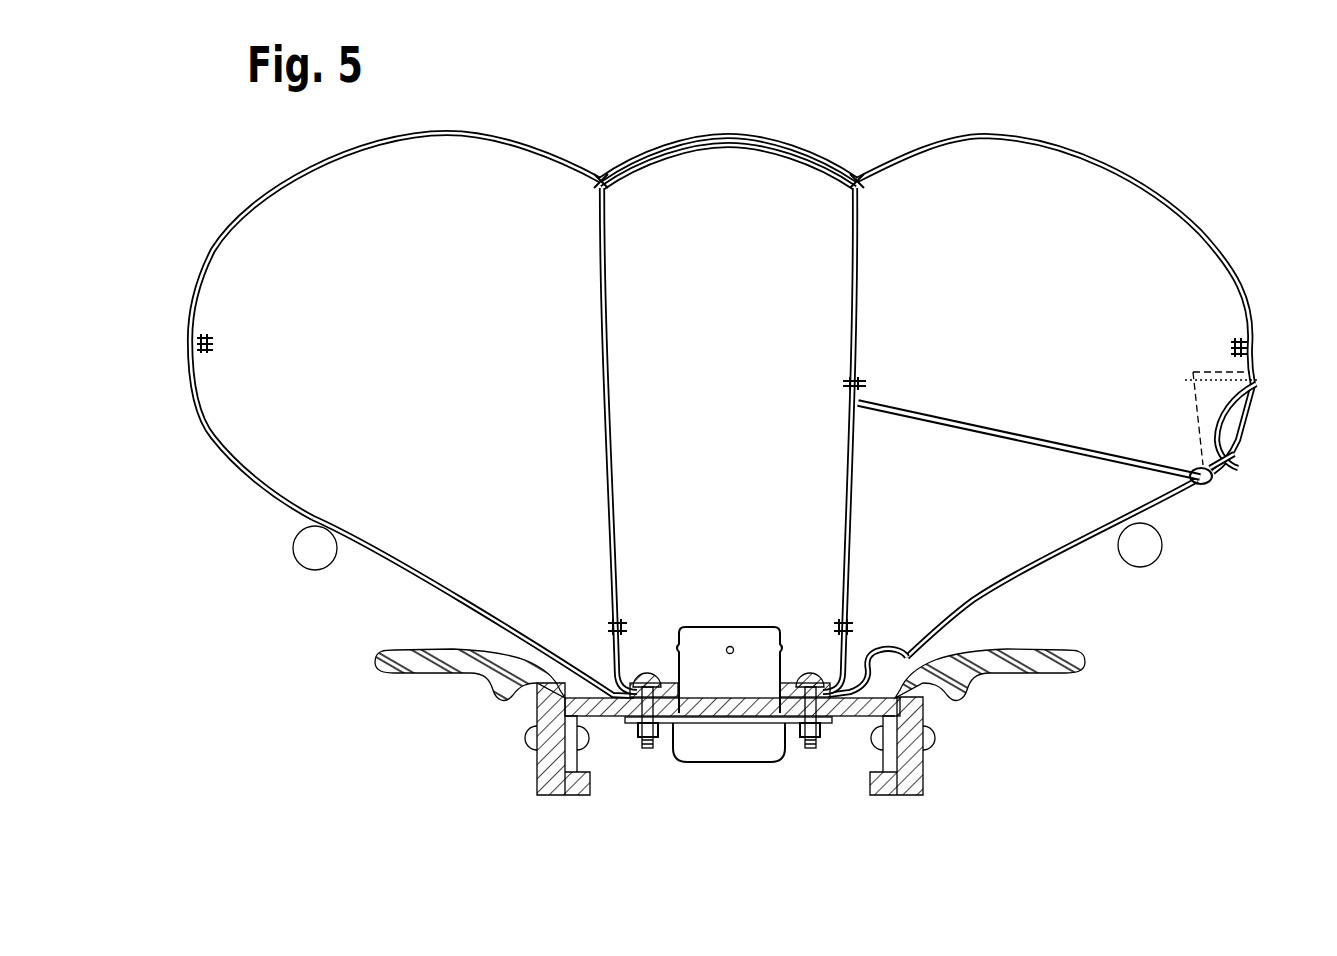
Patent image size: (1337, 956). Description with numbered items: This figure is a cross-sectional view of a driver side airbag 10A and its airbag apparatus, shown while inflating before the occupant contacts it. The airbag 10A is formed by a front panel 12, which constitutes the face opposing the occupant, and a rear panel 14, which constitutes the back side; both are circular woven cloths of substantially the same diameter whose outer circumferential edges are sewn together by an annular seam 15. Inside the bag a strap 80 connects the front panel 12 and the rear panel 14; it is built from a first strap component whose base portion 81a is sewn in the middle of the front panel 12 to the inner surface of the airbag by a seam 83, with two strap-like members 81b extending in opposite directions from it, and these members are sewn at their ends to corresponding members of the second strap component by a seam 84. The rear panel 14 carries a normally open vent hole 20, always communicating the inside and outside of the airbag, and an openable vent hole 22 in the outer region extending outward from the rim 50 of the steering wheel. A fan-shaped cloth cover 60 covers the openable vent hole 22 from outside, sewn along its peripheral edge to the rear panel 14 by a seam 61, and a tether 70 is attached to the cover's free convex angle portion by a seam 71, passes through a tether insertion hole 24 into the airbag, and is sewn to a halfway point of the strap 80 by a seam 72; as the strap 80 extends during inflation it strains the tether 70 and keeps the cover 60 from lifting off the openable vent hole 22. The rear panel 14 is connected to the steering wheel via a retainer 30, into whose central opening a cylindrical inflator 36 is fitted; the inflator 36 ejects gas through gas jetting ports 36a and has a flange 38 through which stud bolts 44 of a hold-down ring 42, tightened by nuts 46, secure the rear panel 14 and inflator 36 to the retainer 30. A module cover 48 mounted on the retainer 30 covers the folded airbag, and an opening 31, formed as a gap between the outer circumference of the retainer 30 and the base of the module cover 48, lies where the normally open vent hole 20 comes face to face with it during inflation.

The airbag 10A is at (1091, 127).
The front panel 12 is at (531, 147).
The rear panel 14 is at (405, 540).
The seam 15 is at (210, 340).
The normally open vent hole 20 is at (903, 650).
The openable vent hole 22 is at (1215, 420).
The tether insertion hole 24 is at (1212, 490).
The retainer 30 is at (557, 692).
The opening 31 is at (880, 715).
The inflator 36 is at (716, 706).
The gas jetting ports 36a is at (722, 648).
The flange 38 is at (690, 724).
The hold-down ring 42 is at (797, 676).
The stud bolts 44 is at (648, 752).
The nuts 46 is at (636, 738).
The module cover 48 is at (380, 668).
The rim 50 is at (305, 568).
The cover 60 is at (1240, 425).
The seam 61 is at (1260, 381).
The tether 70 is at (1030, 437).
The seam 71 is at (1237, 478).
The seam 72 is at (850, 384).
The strap 80 is at (734, 401).
The base portion 81a is at (732, 150).
The strap-like members 81b is at (597, 243).
The seam 83 is at (601, 176).
The seam 84 is at (611, 622).